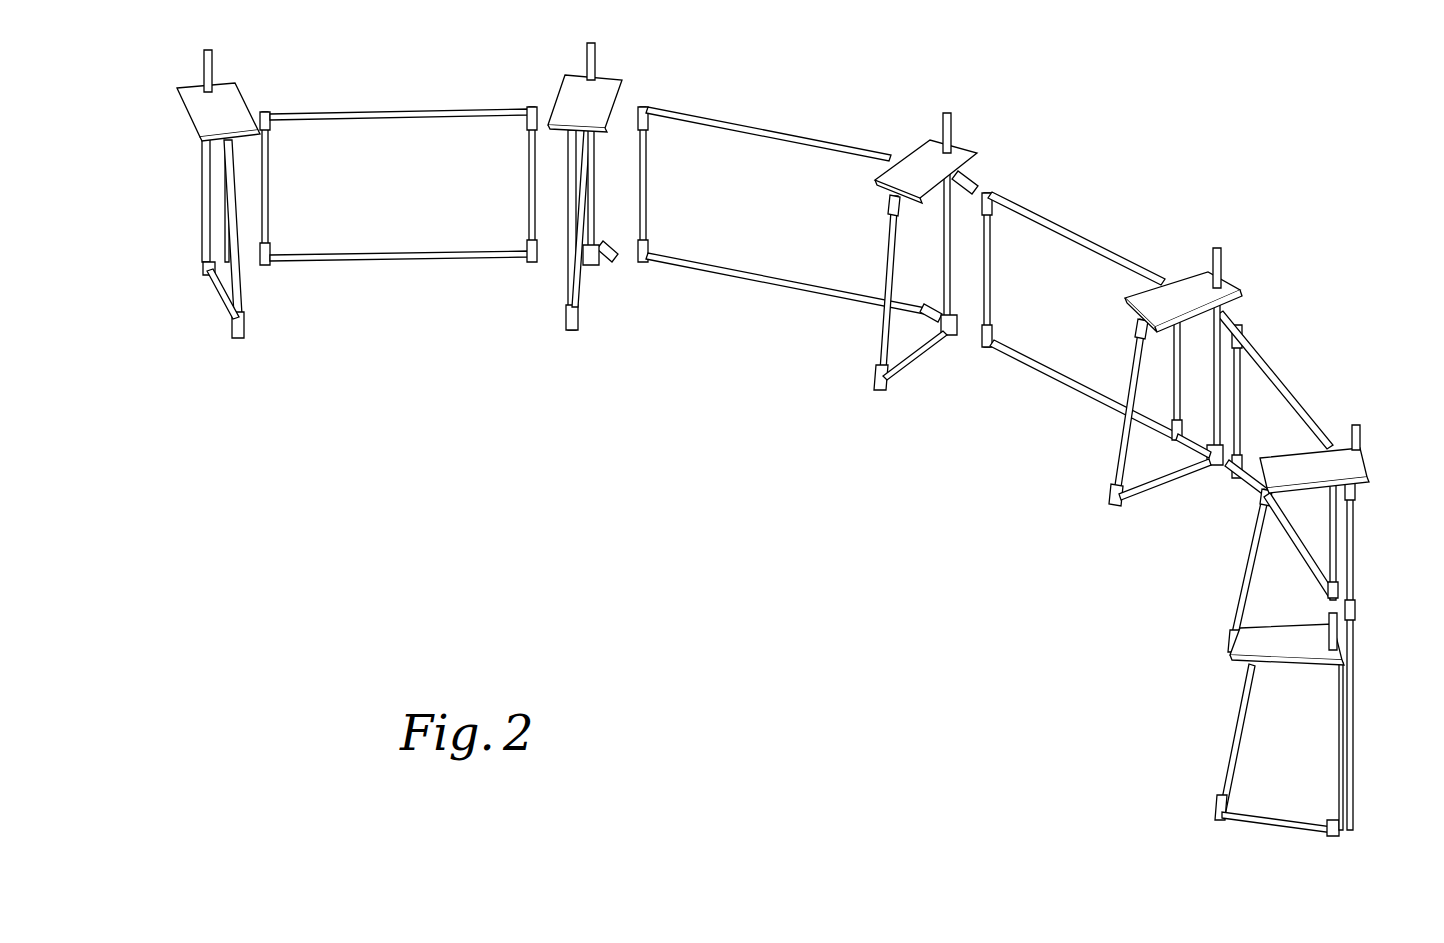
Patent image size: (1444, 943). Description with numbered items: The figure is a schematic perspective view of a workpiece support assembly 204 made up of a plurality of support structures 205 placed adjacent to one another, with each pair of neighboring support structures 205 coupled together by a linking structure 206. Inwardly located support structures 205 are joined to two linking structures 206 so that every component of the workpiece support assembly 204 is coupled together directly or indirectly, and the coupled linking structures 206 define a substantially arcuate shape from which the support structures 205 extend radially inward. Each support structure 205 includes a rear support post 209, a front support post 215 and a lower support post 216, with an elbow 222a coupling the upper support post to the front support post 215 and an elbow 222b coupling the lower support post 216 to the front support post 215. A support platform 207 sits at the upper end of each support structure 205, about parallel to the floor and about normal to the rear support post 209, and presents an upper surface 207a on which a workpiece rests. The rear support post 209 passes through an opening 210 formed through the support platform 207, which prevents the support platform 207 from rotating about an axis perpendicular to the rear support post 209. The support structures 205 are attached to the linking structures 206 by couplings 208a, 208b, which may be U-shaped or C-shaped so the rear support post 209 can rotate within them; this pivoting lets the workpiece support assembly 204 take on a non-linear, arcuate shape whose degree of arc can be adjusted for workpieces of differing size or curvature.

The workpiece support assembly 204 is at (1216, 135).
The support structure 205 is at (740, 483).
The linking structure 206 is at (403, 104).
The support platform 207 is at (773, 354).
The upper surface 207a is at (590, 107).
The coupling 208a is at (968, 182).
The coupling 208b is at (958, 337).
The rear support post 209 is at (208, 196).
The opening 210 is at (1225, 285).
The front support post 215 is at (245, 293).
The lower support post 216 is at (215, 297).
The elbow 222a is at (893, 203).
The elbow 222b is at (875, 377).